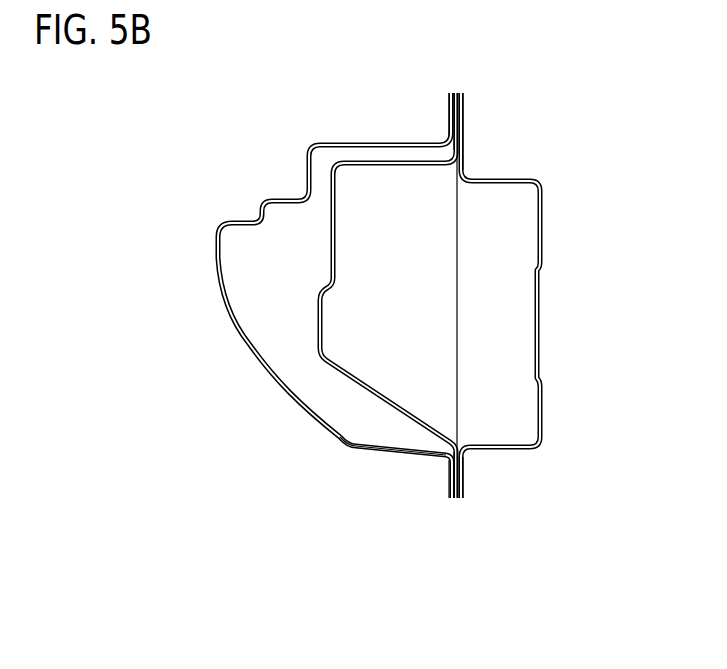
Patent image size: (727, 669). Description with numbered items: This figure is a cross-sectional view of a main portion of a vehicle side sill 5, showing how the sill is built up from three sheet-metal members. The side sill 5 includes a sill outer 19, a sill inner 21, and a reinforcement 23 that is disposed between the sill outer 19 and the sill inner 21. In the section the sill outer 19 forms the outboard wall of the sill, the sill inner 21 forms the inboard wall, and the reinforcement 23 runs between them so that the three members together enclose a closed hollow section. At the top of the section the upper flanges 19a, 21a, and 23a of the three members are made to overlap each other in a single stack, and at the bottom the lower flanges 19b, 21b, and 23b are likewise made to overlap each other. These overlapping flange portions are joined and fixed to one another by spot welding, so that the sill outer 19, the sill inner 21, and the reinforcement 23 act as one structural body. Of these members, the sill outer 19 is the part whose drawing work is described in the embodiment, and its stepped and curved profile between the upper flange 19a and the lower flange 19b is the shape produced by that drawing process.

The side sill 5 is at (345, 448).
The sill outer 19 is at (244, 340).
The upper flange of sill outer 19a is at (450, 100).
The lower flange of sill outer 19b is at (451, 484).
The sill inner 21 is at (543, 325).
The upper flange of sill inner 21a is at (463, 104).
The lower flange of sill inner 21b is at (463, 483).
The reinforcement 23 is at (337, 250).
The upper flange of reinforcement 23a is at (456, 92).
The lower flange of reinforcement 23b is at (457, 500).